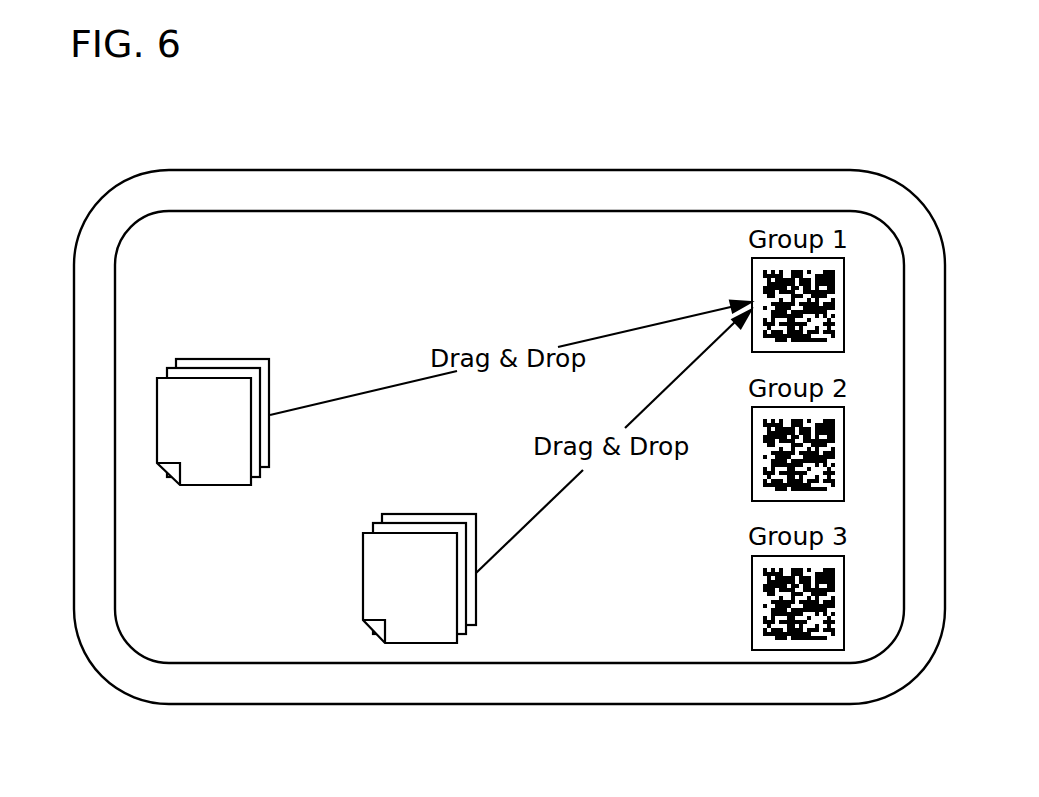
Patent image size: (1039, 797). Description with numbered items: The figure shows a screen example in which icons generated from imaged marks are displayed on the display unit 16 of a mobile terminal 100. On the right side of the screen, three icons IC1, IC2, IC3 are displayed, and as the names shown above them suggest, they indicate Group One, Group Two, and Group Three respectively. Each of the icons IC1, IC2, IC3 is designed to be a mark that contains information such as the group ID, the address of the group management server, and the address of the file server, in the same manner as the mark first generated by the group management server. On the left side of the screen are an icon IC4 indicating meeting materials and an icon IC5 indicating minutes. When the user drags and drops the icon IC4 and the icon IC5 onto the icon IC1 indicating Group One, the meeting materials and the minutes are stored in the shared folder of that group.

The mobile terminal 100 is at (690, 170).
The display unit 16 is at (683, 611).
The icon indicating Group 1 IC1 is at (844, 303).
The icon indicating Group 2 IC2 is at (844, 450).
The icon indicating Group 3 IC3 is at (844, 598).
The icon indicating meeting materials IC4 is at (270, 380).
The icon indicating minutes IC5 is at (476, 600).